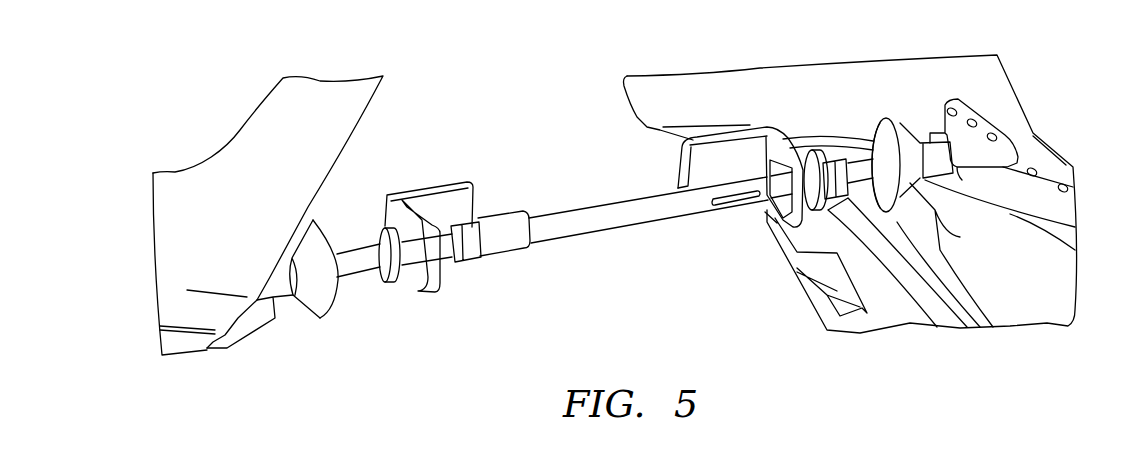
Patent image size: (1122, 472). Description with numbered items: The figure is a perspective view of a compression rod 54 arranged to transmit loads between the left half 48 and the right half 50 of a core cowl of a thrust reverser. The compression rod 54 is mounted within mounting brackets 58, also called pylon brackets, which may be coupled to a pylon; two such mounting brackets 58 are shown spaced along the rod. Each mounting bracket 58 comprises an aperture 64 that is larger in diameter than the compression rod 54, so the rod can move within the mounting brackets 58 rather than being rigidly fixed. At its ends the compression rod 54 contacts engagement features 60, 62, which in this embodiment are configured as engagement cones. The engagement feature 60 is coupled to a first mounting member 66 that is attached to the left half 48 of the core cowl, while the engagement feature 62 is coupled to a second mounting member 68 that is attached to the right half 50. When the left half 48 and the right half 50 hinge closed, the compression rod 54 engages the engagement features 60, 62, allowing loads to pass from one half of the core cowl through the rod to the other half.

The left half 48 is at (250, 118).
The right half 50 is at (953, 55).
The compression rod 54 is at (590, 207).
The mounting brackets 58 is at (458, 180).
The engagement feature 60 is at (303, 313).
The engagement feature 62 is at (960, 237).
The apertures 64 is at (413, 282).
The first mounting member 66 is at (233, 333).
The second mounting member 68 is at (1028, 200).